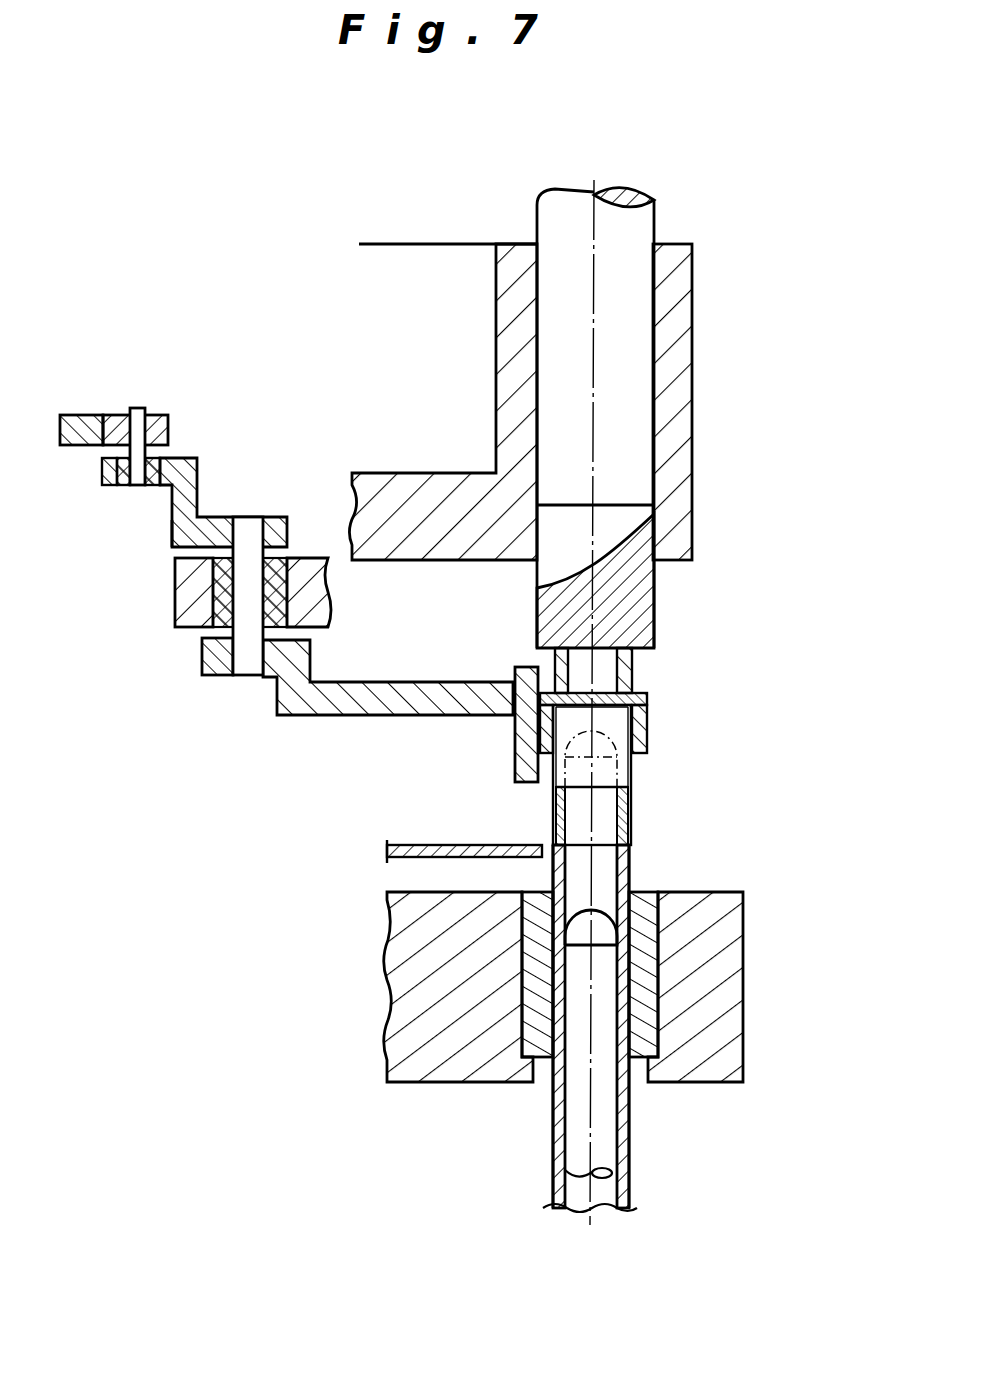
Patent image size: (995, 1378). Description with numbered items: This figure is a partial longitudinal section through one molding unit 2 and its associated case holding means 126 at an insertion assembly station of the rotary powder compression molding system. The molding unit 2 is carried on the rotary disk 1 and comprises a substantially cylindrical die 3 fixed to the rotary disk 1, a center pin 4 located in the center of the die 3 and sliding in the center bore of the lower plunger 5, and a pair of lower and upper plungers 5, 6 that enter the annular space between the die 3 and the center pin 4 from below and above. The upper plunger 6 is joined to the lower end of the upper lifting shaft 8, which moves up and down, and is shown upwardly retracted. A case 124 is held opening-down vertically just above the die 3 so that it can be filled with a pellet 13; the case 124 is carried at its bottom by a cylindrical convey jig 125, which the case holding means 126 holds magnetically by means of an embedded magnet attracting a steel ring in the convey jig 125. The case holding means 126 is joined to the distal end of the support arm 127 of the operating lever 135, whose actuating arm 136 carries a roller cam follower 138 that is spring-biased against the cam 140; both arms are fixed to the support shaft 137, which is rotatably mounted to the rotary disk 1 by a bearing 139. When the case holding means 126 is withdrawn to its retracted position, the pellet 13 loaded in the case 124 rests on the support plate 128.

The rotary disk 1 is at (415, 490).
The molding unit 2 is at (642, 858).
The die 3 is at (645, 976).
The center pin 4 is at (585, 1113).
The lower plunger 5 is at (623, 1118).
The upper plunger 6 is at (638, 622).
The upper lifting shaft 8 is at (630, 271).
The pellet 13 is at (632, 800).
The case 124 is at (632, 762).
The convey jig 125 is at (647, 707).
The case holding means 126 is at (525, 762).
The support arm 127 is at (382, 697).
The support plate 128 is at (387, 856).
The operating lever 135 is at (214, 508).
The actuating arm 136 is at (172, 522).
The support shaft 137 is at (252, 663).
The cam follower 138 is at (152, 413).
The bearing 139 is at (222, 645).
The cam 140 is at (90, 415).